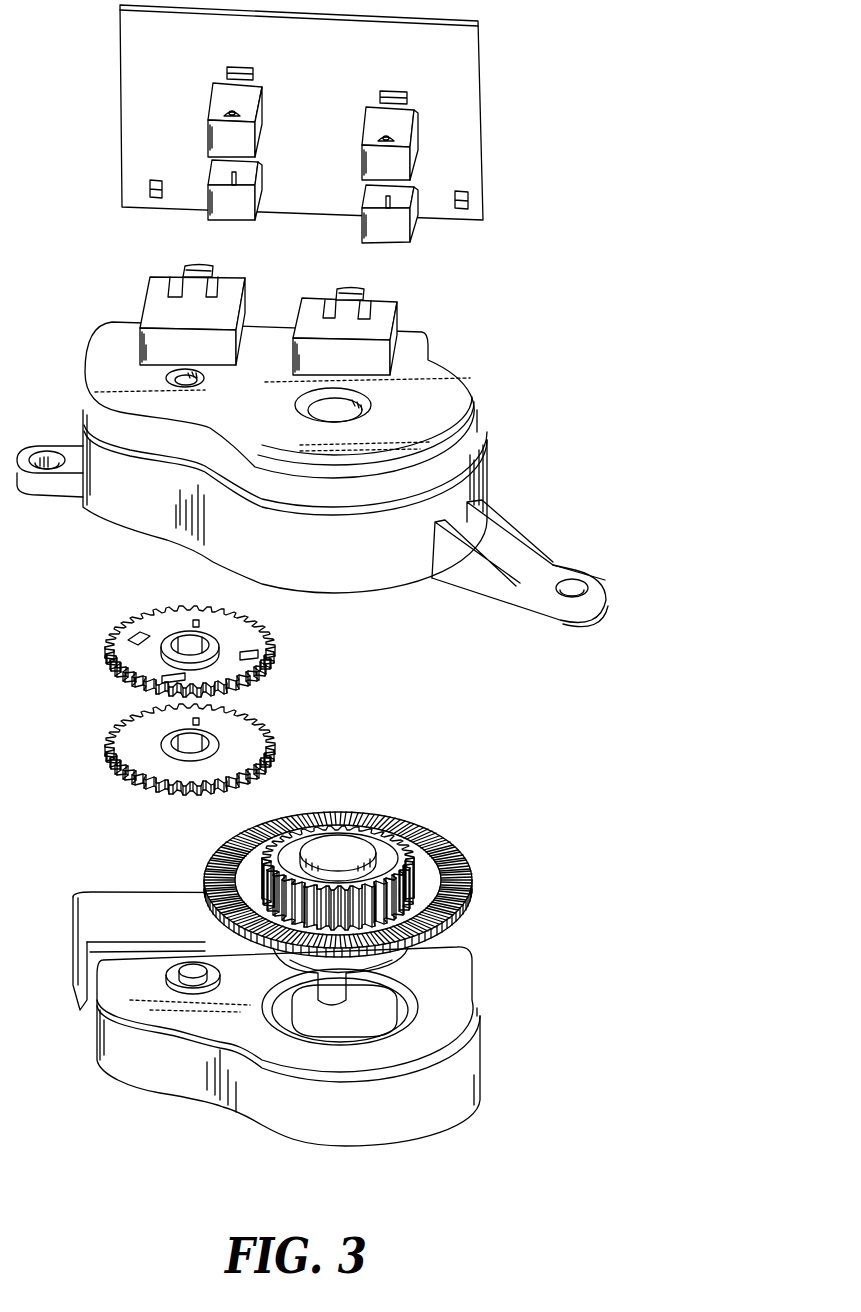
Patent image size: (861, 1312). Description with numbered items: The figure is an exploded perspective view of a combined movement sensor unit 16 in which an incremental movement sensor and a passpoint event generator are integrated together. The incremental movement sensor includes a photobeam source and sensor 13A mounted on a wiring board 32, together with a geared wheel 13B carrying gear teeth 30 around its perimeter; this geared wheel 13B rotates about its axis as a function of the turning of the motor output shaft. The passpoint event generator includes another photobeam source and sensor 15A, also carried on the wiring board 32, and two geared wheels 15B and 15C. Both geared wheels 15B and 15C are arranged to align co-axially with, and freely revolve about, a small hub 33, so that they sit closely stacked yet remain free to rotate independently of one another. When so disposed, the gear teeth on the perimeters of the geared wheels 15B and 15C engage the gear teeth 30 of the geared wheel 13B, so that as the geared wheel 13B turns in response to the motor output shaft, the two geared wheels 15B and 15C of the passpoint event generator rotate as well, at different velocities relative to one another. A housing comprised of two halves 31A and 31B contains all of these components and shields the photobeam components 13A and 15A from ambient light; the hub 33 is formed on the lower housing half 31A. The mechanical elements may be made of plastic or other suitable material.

The wiring board 32 is at (467, 90).
The photobeam source and sensor 15A is at (238, 212).
The photobeam source and sensor 13A is at (395, 235).
The housing half 31B is at (480, 402).
The first geared wheel 15B is at (275, 646).
The second geared wheel 15C is at (275, 744).
The combined movement sensor unit 16 is at (492, 723).
The gear teeth 30 is at (350, 816).
The geared wheel 13B is at (462, 857).
The hub 33 is at (194, 968).
The housing half 31A is at (453, 1112).